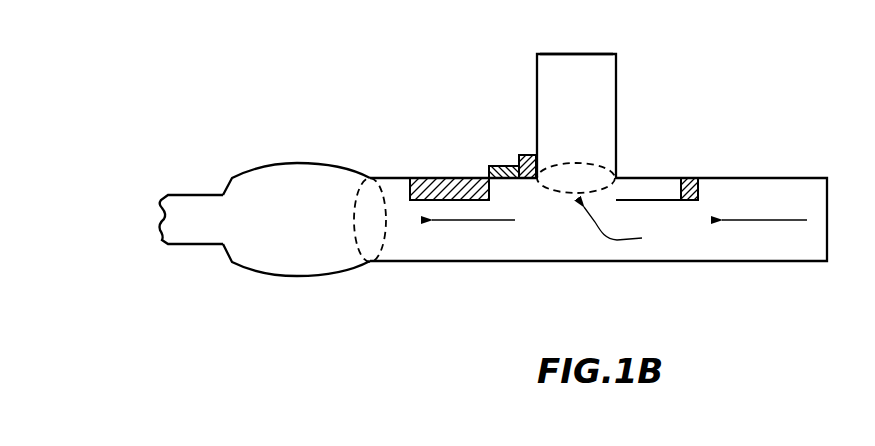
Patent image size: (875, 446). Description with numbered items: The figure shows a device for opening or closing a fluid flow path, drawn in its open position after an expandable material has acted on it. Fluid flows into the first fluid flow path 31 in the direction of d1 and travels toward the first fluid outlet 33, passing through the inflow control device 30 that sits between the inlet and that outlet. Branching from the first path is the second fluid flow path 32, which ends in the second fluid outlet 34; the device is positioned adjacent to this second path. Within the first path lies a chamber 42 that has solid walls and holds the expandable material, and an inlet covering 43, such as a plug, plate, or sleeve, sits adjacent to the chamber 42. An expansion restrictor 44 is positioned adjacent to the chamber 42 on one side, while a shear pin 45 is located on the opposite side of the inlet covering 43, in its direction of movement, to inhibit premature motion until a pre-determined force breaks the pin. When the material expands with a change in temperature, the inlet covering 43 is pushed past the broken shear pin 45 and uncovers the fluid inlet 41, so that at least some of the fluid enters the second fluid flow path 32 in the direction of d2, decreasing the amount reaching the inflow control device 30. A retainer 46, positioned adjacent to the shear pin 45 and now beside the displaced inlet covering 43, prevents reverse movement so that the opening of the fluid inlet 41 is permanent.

The inflow control device 30 is at (253, 168).
The first fluid flow path 31 is at (782, 178).
The second fluid flow path 32 is at (617, 97).
The first fluid outlet 33 is at (190, 195).
The second fluid outlet 34 is at (600, 53).
The fluid inlet 41 is at (553, 184).
The chamber 42 is at (668, 200).
The inlet covering 43 is at (468, 220).
The expansion restrictor 44 is at (692, 178).
The shear pin 45 is at (527, 153).
The retainer 46 is at (490, 166).
The direction of fluid flow into first fluid flow path d1 is at (773, 220).
The direction of fluid flow into second fluid flow path d2 is at (615, 241).